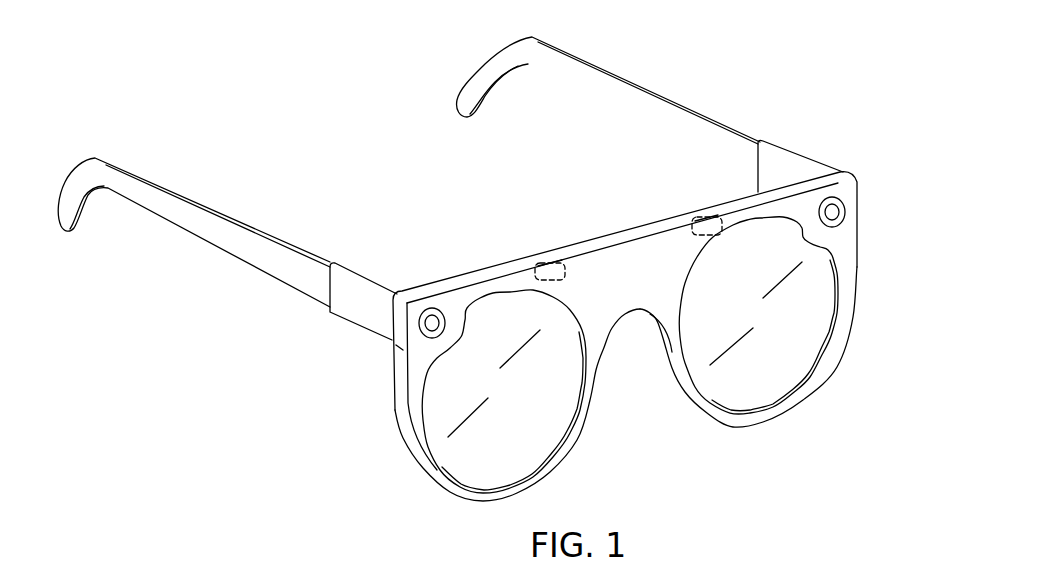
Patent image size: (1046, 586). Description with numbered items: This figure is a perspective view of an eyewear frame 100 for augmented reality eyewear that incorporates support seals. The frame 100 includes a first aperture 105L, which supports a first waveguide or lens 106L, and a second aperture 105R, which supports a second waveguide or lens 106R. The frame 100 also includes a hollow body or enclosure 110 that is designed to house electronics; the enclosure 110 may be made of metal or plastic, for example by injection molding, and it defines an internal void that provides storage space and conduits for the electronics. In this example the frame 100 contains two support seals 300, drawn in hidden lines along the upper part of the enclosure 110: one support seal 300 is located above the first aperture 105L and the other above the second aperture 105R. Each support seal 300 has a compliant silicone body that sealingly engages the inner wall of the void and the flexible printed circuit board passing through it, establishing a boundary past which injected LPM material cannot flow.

The eyewear frame 100 is at (760, 100).
The enclosure 110 is at (425, 280).
The second aperture 105R is at (546, 431).
The first aperture 105L is at (796, 365).
The second lens 106R is at (462, 453).
The first lens 106L is at (735, 403).
The support seal 300 is at (542, 262).